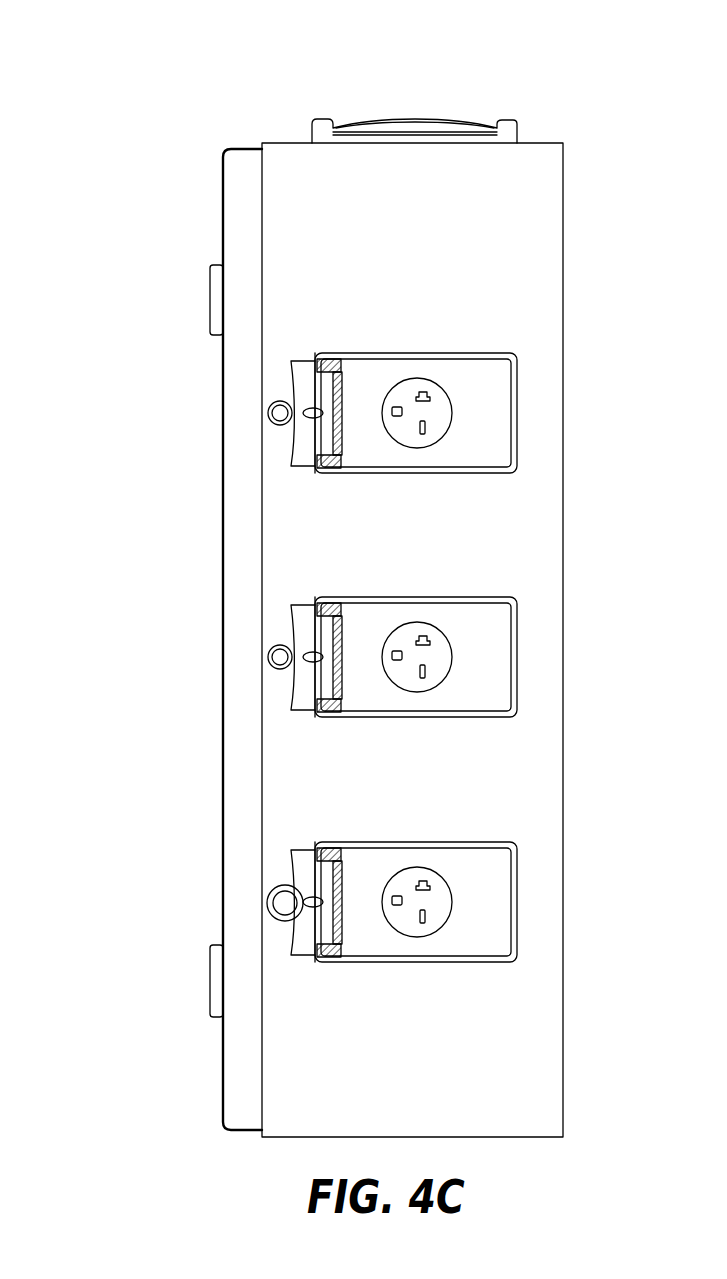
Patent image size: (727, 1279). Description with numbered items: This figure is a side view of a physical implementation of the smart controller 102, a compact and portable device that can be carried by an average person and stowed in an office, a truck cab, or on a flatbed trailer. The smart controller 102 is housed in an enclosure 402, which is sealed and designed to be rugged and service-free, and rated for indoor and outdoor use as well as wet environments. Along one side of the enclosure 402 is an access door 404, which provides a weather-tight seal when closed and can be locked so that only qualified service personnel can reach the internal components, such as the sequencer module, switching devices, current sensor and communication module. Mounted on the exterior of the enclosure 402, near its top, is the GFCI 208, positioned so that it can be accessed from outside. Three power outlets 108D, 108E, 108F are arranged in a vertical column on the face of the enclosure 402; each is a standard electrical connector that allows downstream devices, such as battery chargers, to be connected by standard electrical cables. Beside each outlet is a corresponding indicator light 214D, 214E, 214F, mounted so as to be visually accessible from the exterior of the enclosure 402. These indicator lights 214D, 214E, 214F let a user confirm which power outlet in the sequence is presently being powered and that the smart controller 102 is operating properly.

The smart controller 102 is at (96, 60).
The GFCI 208 is at (416, 124).
The enclosure 402 is at (421, 214).
The access door 404 is at (241, 544).
The power outlet 108D is at (413, 392).
The power outlet 108E is at (413, 636).
The power outlet 108F is at (413, 880).
The indicator light 214D is at (272, 418).
The indicator light 214E is at (272, 662).
The indicator light 214F is at (281, 903).